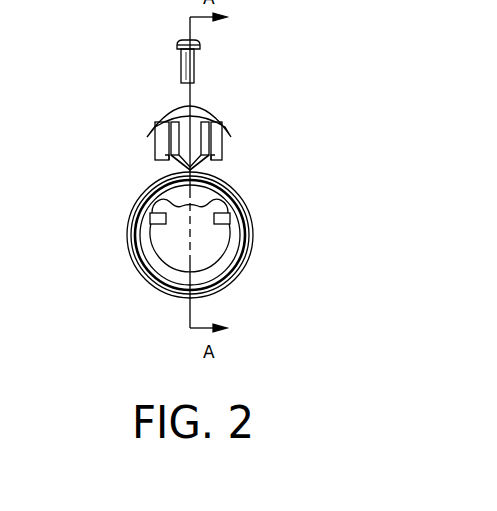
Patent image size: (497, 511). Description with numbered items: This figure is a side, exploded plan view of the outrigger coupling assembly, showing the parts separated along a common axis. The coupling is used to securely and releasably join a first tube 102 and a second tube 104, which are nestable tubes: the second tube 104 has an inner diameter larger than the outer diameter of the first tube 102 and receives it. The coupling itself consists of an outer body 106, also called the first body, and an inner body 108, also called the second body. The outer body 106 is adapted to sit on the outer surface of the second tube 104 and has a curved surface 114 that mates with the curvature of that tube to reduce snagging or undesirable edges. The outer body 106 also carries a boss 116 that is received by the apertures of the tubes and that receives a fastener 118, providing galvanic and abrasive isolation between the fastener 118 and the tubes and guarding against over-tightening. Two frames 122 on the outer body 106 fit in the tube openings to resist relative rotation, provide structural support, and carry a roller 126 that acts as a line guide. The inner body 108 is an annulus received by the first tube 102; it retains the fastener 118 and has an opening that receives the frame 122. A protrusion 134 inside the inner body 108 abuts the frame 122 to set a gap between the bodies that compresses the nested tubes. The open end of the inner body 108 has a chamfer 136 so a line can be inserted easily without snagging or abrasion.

The first tube 102 is at (183, 221).
The second tube 104 is at (123, 252).
The outer body 106 is at (194, 132).
The inner body 108 is at (140, 225).
The curved surface 114 is at (205, 105).
The boss 116 is at (227, 127).
The fastener 118 is at (200, 44).
The frame 122 is at (148, 150).
The roller 126 is at (210, 165).
The protrusion 134 is at (153, 218).
The chamfer 136 is at (233, 255).